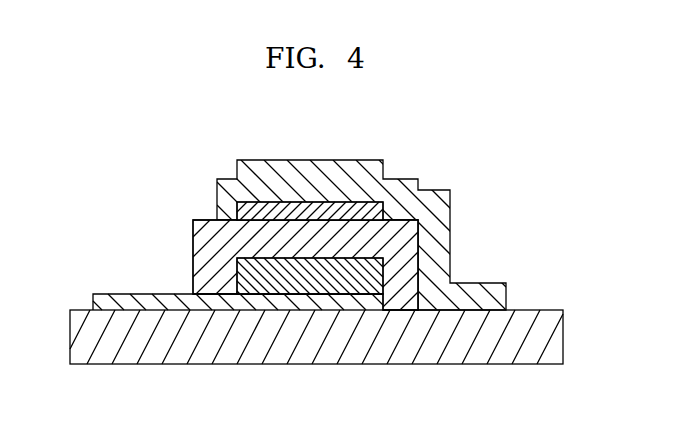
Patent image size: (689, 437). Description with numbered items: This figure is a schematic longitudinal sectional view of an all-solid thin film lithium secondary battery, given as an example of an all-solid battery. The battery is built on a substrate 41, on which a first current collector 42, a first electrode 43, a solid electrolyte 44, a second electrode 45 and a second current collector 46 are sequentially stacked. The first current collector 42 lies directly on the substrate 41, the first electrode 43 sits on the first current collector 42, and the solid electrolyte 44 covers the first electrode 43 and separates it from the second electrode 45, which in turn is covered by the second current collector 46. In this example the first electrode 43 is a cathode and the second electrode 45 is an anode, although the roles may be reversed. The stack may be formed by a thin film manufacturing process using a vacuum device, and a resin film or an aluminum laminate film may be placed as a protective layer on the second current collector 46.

The substrate 41 is at (437, 350).
The first current collector 42 is at (142, 293).
The first electrode 43 is at (309, 287).
The solid electrolyte 44 is at (413, 258).
The second electrode 45 is at (312, 203).
The second current collector 46 is at (440, 217).